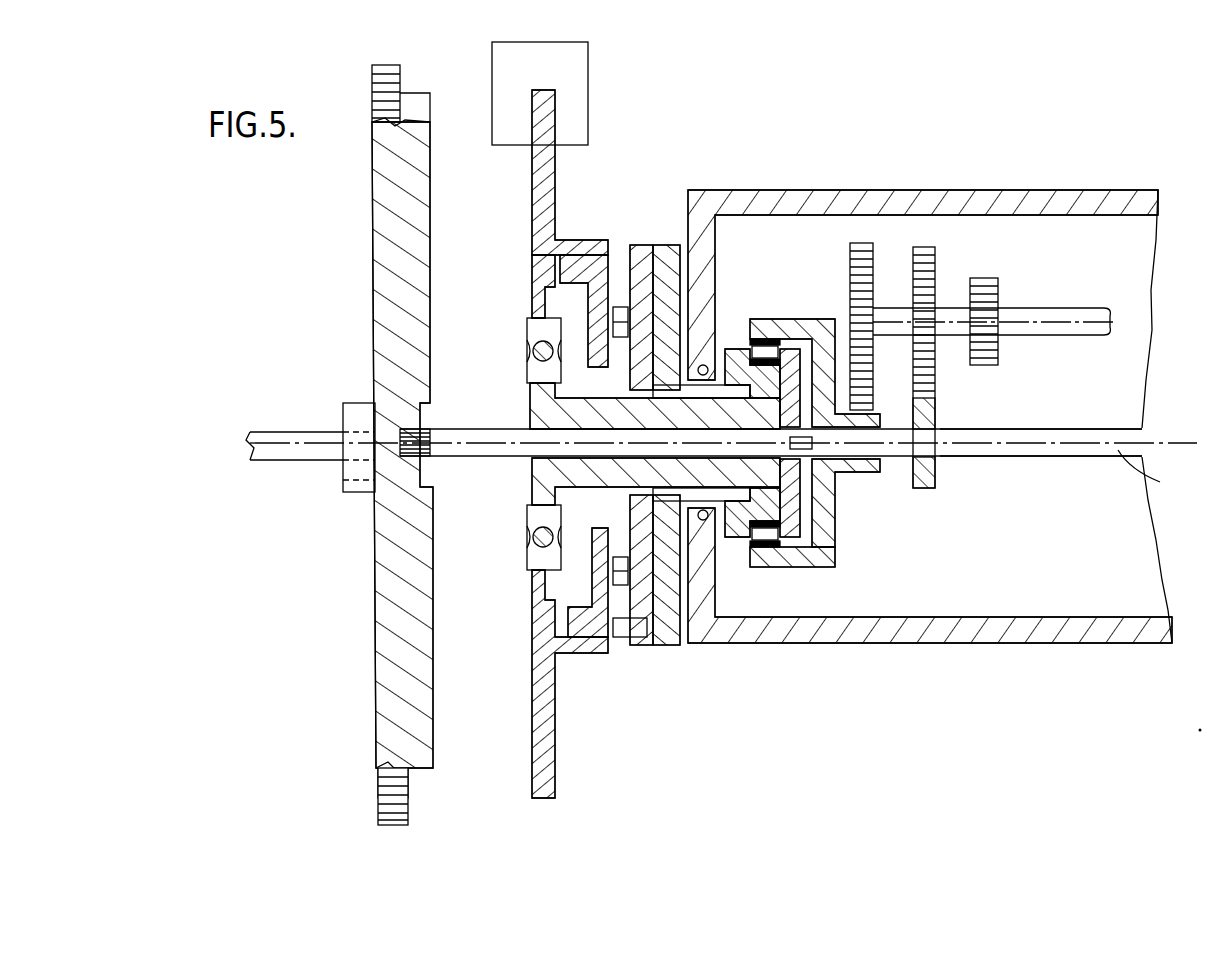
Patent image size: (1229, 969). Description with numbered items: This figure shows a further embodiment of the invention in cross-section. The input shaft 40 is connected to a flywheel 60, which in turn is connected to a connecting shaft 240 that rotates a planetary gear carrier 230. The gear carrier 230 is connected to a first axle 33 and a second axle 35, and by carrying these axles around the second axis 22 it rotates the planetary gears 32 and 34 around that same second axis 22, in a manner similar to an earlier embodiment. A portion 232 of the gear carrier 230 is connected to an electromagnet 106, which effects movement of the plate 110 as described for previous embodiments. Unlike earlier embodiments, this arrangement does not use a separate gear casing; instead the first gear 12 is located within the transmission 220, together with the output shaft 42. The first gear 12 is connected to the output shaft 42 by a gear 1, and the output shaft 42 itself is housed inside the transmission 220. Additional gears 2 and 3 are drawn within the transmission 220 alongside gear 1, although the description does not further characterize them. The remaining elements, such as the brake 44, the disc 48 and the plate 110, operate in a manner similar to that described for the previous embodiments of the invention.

The gear 1 is at (861, 311).
The second gear 2 is at (924, 351).
The third gear 3 is at (984, 303).
The first gear 12 is at (825, 582).
The second axis 22 is at (1157, 478).
The planetary gear 32 is at (764, 338).
The first axle 33 is at (784, 352).
The planetary gear 34 is at (750, 550).
The second axle 35 is at (822, 550).
The input shaft 40 is at (305, 470).
The output shaft 42 is at (1105, 426).
The brake 44 is at (600, 52).
The disc 48 is at (567, 787).
The flywheel 60 is at (368, 790).
The electromagnet 106 is at (650, 646).
The plate 110 is at (578, 272).
The transmission 220 is at (1080, 470).
The gear carrier 230 is at (804, 505).
The portion of the gear carrier 232 is at (669, 242).
The connecting shaft 240 is at (470, 410).